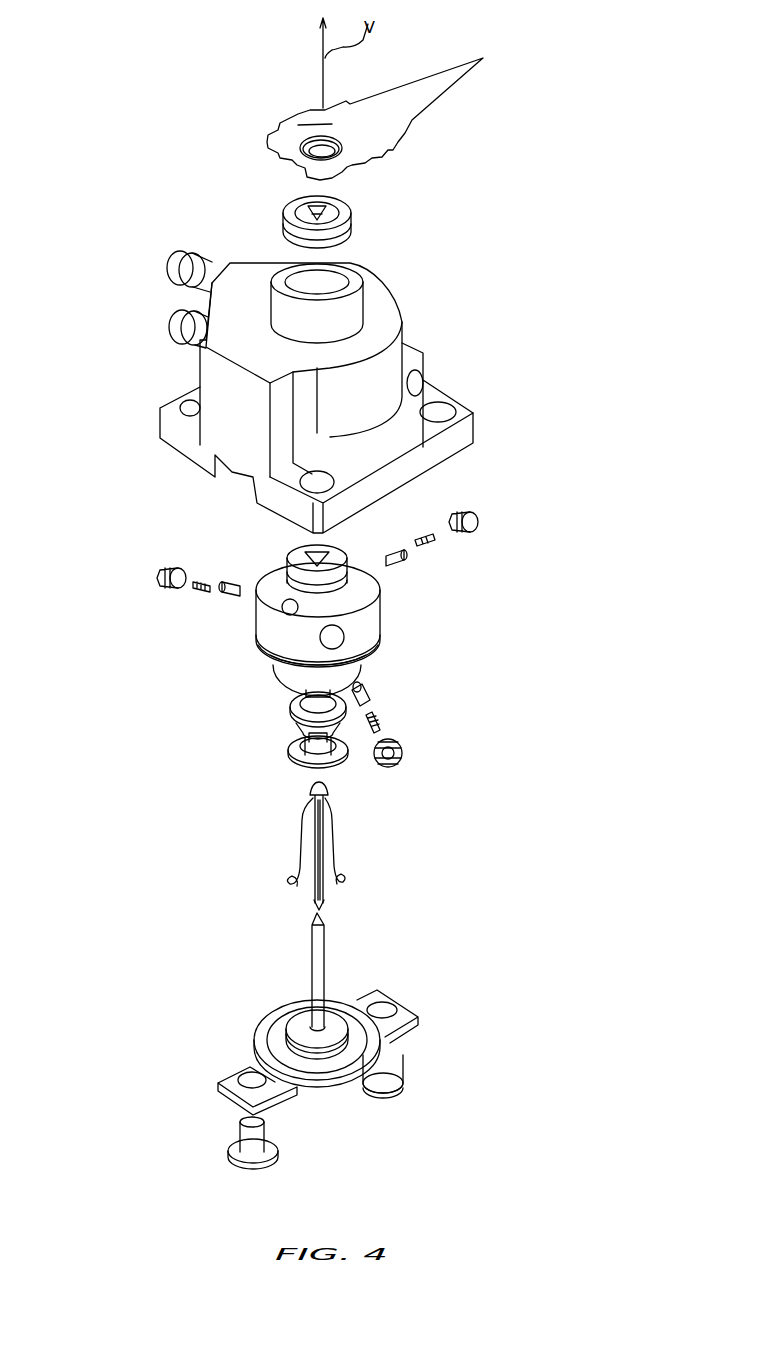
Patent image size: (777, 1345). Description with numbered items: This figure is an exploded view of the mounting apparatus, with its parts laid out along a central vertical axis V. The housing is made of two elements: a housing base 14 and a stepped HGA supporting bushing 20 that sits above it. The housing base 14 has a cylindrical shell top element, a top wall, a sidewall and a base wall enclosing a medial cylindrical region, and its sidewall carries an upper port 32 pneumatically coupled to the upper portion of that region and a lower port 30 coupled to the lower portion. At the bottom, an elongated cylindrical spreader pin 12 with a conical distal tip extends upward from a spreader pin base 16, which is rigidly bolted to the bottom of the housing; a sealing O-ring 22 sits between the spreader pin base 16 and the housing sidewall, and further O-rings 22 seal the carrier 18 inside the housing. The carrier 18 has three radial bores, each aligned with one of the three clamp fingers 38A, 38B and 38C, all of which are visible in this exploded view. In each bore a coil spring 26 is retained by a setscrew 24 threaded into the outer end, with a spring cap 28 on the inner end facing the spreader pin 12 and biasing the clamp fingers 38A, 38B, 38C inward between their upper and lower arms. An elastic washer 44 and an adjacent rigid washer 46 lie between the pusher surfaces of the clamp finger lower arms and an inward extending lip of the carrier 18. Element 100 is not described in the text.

The retainer plate 100 is at (293, 130).
The spreader pin 12 is at (315, 978).
The housing base 14 is at (383, 365).
The spreader pin base 16 is at (417, 1003).
The carrier 18 is at (383, 603).
The HGA supporting bushing 20 is at (352, 215).
The sealing O-ring 22 is at (290, 612).
The setscrew 24 is at (383, 740).
The coil spring 26 is at (368, 716).
The spring cap 28 is at (357, 690).
The lower port 30 is at (178, 317).
The upper port 32 is at (170, 260).
The clamp finger 38A is at (323, 903).
The clamp finger 38B is at (302, 852).
The clamp finger 38C is at (333, 842).
The elastic washer 44 is at (290, 717).
The rigid washer 46 is at (288, 757).